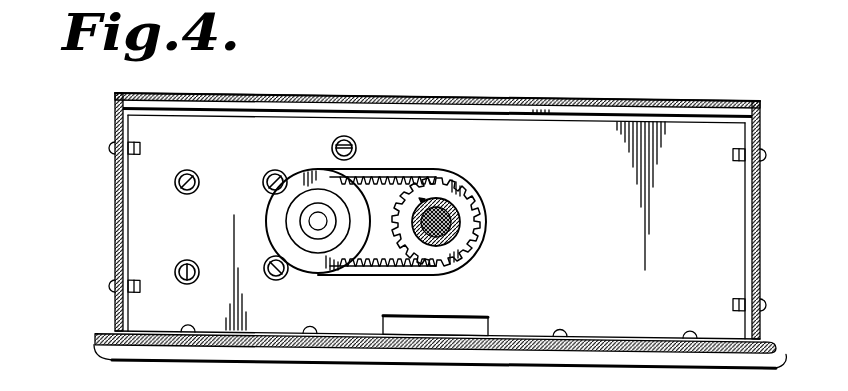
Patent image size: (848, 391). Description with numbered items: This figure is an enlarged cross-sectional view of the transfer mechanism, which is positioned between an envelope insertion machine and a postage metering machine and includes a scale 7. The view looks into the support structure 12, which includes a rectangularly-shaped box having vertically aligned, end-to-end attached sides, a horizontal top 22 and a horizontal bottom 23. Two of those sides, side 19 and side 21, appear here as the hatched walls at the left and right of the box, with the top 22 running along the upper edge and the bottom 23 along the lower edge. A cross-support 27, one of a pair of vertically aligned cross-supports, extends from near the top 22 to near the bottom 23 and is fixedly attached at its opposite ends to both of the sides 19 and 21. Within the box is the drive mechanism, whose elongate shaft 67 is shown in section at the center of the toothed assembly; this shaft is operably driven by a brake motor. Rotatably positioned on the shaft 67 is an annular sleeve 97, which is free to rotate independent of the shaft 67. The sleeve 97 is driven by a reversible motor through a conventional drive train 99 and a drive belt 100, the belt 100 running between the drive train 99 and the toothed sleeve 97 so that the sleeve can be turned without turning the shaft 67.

The scale 7 is at (306, 349).
The support structure 12 is at (609, 96).
The side 19 is at (115, 221).
The side 21 is at (762, 236).
The horizontal top 22 is at (358, 99).
The horizontal bottom 23 is at (594, 332).
The cross-support 27 is at (445, 220).
The elongate shaft 67 is at (447, 228).
The annular sleeve 97 is at (460, 206).
The drive train 99 is at (337, 273).
The drive belt 100 is at (408, 275).